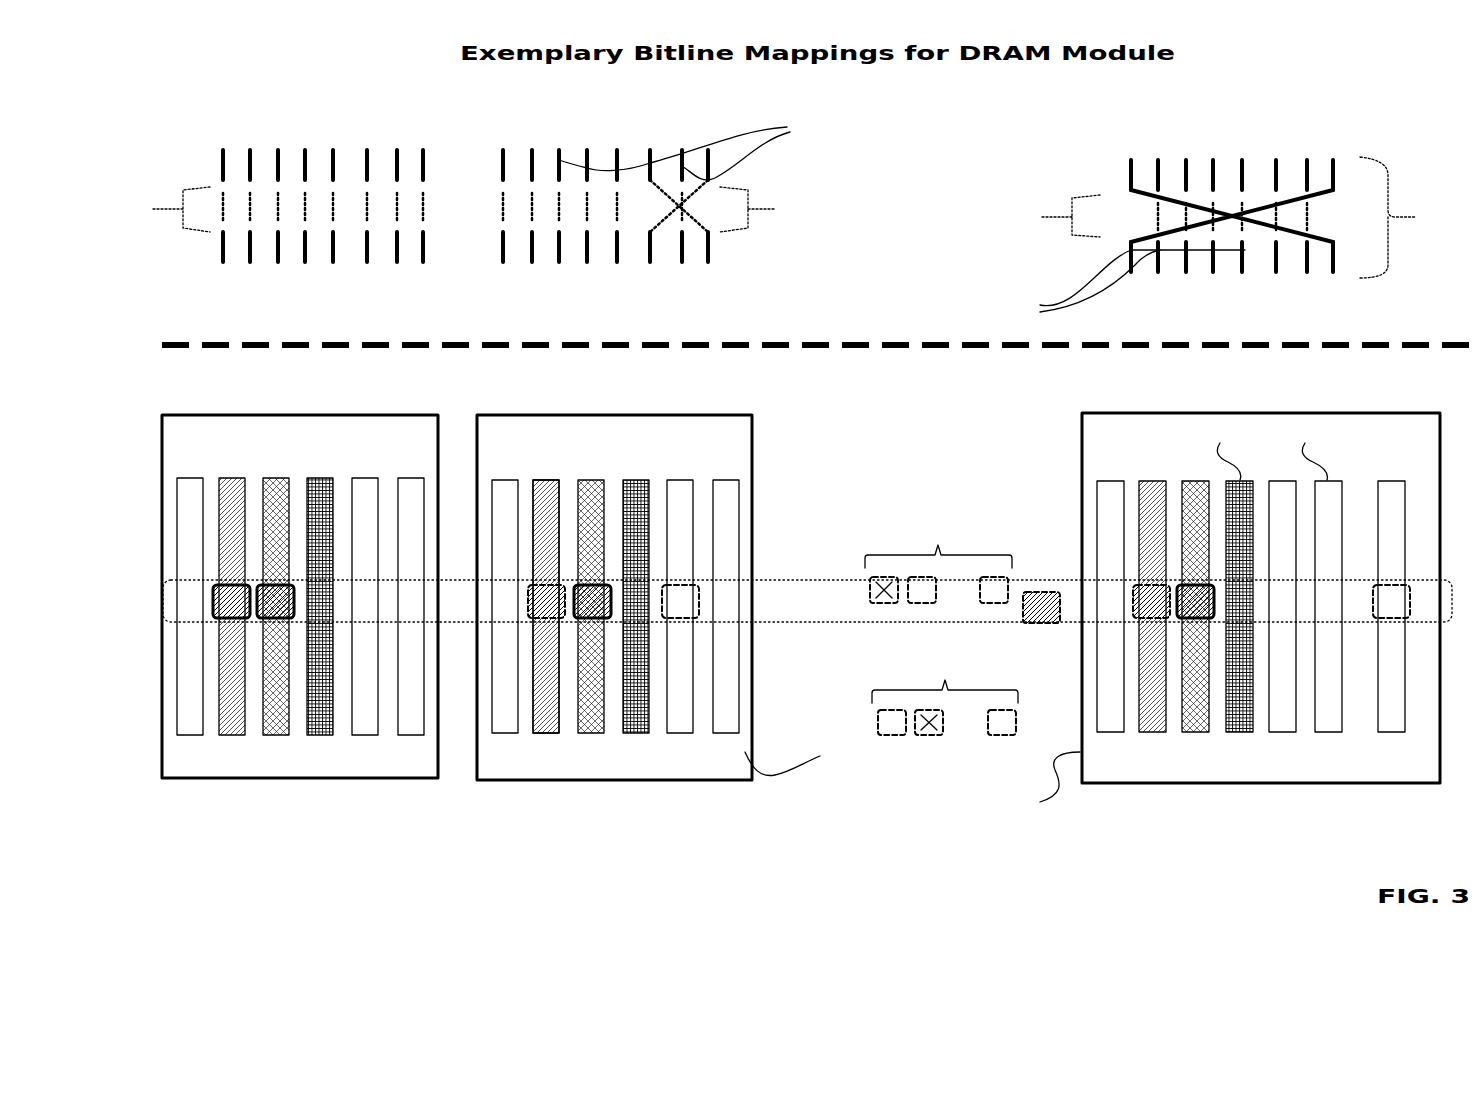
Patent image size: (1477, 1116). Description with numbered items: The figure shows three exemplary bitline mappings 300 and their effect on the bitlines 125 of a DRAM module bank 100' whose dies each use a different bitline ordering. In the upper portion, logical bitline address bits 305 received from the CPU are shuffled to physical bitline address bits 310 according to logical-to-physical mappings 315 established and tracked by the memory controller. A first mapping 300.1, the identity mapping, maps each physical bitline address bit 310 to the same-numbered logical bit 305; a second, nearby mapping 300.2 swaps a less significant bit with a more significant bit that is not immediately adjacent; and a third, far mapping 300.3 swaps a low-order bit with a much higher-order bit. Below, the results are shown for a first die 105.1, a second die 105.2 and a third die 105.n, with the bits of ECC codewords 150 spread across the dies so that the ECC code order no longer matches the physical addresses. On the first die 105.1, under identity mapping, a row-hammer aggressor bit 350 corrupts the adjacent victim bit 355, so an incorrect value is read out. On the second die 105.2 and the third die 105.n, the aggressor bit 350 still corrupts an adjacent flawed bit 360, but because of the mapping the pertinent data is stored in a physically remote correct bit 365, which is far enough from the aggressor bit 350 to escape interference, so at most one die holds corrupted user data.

The bitline mappings 300 is at (145, 96).
The first bitline mapping 300.1 is at (461, 209).
The second bitline mapping 300.2 is at (621, 226).
The third bitline mapping 300.3 is at (1230, 209).
The logical bitline address bits 305 is at (803, 286).
The physical bitline address bits 310 is at (995, 538).
The physical-to-logical mappings 315 is at (626, 204).
The bitlines 125 is at (397, 877).
The DRAM module bank 100' is at (802, 485).
The first die 105.1 is at (300, 578).
The second die 105.2 is at (614, 578).
The third die 105.n is at (1261, 580).
The ECC codeword 150 is at (940, 622).
The aggressor bit 350 is at (275, 618).
The victim bit 355 is at (233, 618).
The flawed bit 360 is at (546, 618).
The correct bit 365 is at (680, 618).